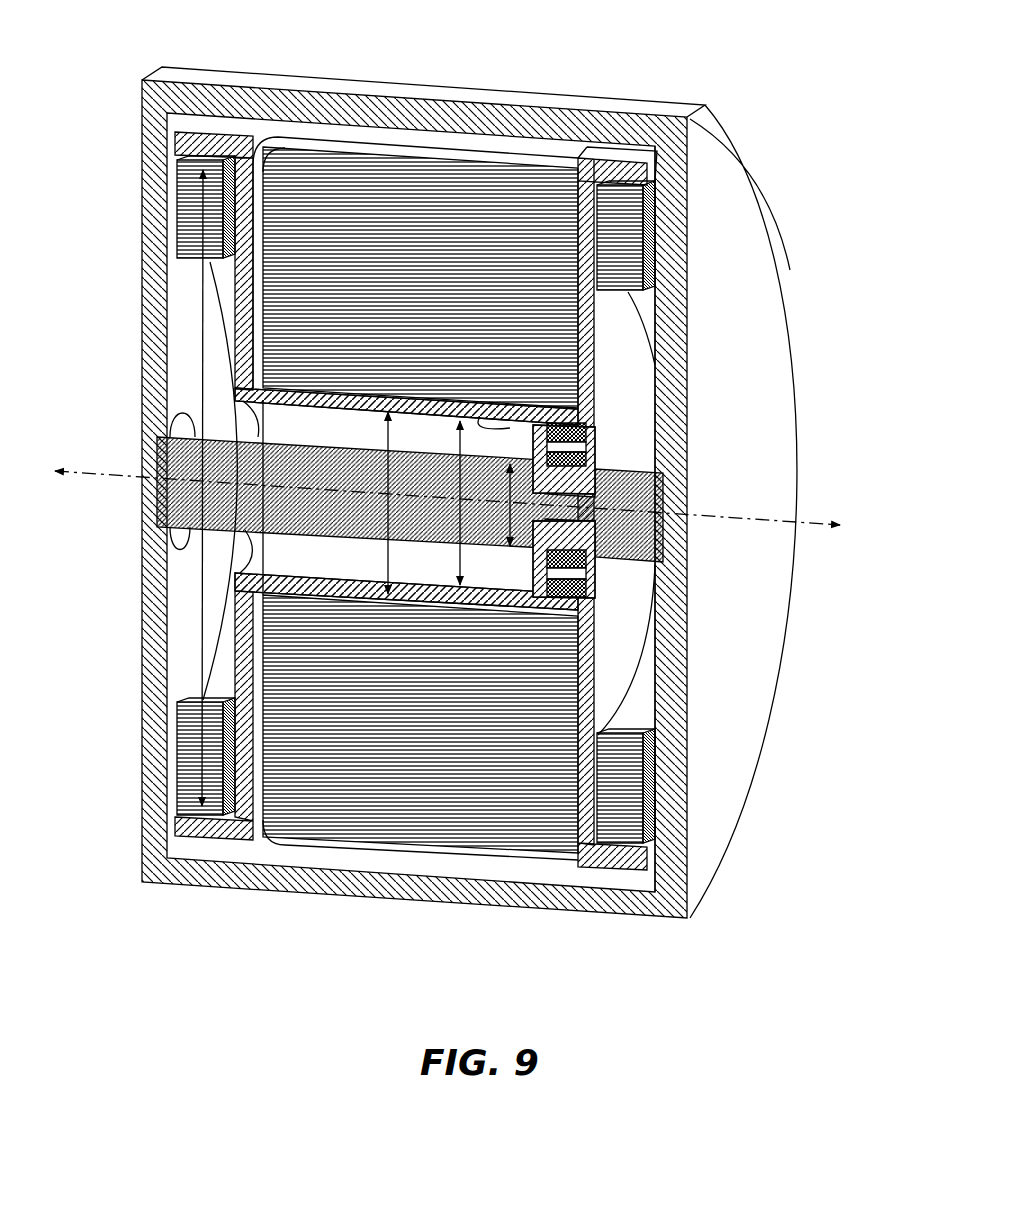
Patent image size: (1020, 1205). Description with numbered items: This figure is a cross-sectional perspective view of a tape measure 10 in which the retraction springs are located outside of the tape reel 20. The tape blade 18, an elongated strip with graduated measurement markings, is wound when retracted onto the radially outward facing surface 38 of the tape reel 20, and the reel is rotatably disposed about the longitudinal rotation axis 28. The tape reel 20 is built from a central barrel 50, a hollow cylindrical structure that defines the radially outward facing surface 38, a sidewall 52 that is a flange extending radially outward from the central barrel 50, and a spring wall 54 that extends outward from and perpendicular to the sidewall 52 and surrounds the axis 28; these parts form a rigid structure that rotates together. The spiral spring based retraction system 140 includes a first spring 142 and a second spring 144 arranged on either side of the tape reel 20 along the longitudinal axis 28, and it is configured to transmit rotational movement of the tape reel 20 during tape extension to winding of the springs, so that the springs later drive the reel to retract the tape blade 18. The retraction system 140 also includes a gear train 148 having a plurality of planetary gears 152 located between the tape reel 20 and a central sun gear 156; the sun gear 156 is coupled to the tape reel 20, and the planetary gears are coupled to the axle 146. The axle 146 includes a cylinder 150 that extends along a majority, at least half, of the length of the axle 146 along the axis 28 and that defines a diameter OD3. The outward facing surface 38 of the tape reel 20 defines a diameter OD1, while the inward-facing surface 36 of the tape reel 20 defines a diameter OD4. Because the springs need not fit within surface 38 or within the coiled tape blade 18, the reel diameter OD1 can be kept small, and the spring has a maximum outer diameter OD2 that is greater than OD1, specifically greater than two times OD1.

The tape measure 10 is at (782, 100).
The tape blade 18 is at (530, 318).
The tape reel 20 is at (583, 198).
The rotation axis 28 is at (810, 520).
The inward-facing surface 36 is at (588, 393).
The radially outward facing surface 38 is at (438, 387).
The central barrel 50 is at (343, 590).
The sidewall 52 is at (260, 240).
The spring wall 54 is at (357, 137).
The retraction system 140 is at (106, 281).
The first spring 142 is at (193, 203).
The second spring 144 is at (612, 243).
The axle 146 is at (172, 503).
The gear train 148 is at (664, 459).
The cylinder 150 is at (172, 457).
The planetary gears 152 is at (687, 655).
The sun gear 156 is at (600, 568).
The reel outer diameter OD1 is at (423, 594).
The spring maximum outer diameter OD2 is at (197, 615).
The cylinder diameter OD3 is at (662, 549).
The reel inner diameter OD4 is at (430, 445).